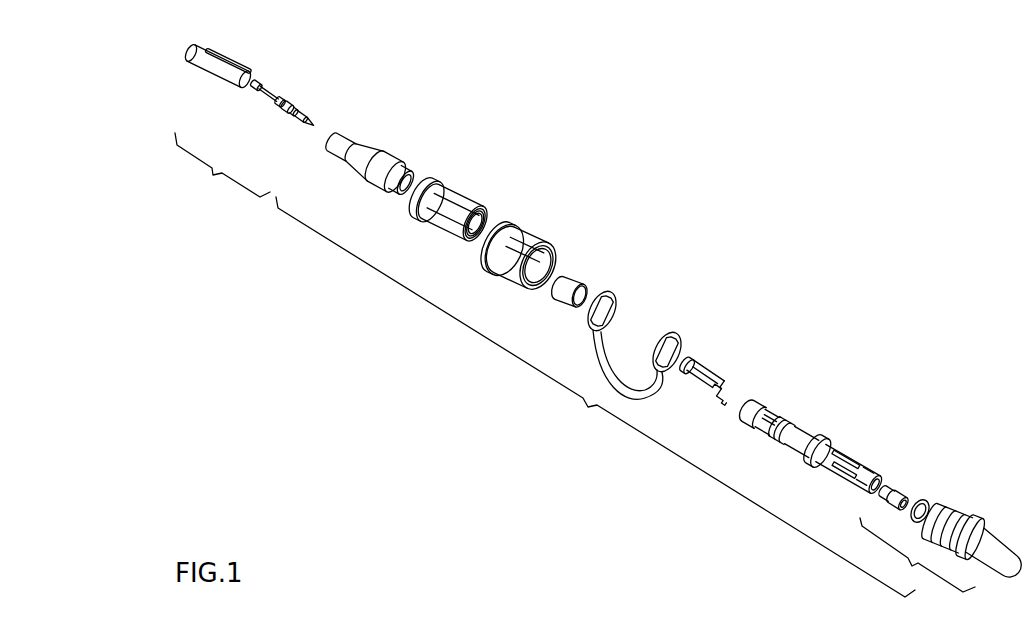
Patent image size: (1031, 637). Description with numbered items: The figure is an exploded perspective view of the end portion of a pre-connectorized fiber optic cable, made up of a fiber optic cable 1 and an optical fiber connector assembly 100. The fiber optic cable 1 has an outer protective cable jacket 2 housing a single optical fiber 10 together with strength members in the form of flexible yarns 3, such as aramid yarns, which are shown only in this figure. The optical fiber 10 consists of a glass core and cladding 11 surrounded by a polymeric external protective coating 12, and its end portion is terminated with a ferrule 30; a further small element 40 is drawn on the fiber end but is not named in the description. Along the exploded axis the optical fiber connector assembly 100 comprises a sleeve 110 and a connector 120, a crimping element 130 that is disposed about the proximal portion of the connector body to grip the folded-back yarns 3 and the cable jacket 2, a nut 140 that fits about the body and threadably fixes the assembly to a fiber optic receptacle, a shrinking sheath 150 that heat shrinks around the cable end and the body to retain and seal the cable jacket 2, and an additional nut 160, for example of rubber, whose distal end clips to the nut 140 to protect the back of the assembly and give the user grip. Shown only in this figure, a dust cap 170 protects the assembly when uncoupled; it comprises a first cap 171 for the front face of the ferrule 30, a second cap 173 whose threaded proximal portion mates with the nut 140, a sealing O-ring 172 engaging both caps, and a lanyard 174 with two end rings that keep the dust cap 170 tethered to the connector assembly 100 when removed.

The fiber optic cable 1 is at (222, 165).
The outer protective cable jacket 2 is at (213, 67).
The flexible yarns 3 is at (226, 53).
The optical fiber 10 is at (246, 104).
The core and cladding 11 is at (267, 104).
The external protective coating 12 is at (257, 84).
The ferrule 30 is at (300, 128).
The rings 40 is at (293, 105).
The optical fiber connector assembly 100 is at (595, 397).
The sleeve 110 is at (705, 378).
The connector 120 is at (800, 438).
The crimping element 130 is at (570, 279).
The nut 140 is at (521, 238).
The shrinking sheath 150 is at (376, 158).
The additional nut 160 is at (447, 204).
The dust cap 170 is at (917, 555).
The first cap 171 is at (893, 488).
The sealing O-ring 172 is at (924, 502).
The second cap 173 is at (998, 553).
The lanyard 174 is at (622, 298).